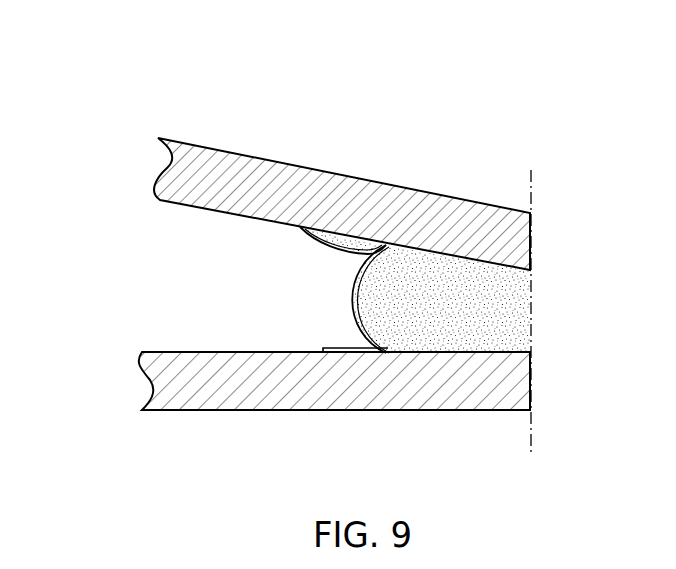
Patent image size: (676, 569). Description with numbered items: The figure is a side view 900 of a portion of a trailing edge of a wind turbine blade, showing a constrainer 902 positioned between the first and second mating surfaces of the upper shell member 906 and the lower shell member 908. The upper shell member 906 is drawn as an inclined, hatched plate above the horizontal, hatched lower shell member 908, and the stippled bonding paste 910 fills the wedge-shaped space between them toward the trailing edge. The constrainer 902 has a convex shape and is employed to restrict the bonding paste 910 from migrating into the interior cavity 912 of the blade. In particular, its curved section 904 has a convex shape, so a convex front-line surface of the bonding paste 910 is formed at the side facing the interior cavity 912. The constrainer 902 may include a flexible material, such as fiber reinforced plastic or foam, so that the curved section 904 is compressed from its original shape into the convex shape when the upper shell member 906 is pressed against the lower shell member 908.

The side view of a portion of a trailing edge of a wind turbine blade 900 is at (513, 73).
The constrainer 902 is at (327, 312).
The curved section 904 is at (355, 293).
The upper shell member 906 is at (333, 182).
The lower shell member 908 is at (248, 409).
The bonding paste 910 is at (432, 341).
The interior cavity 912 is at (152, 277).